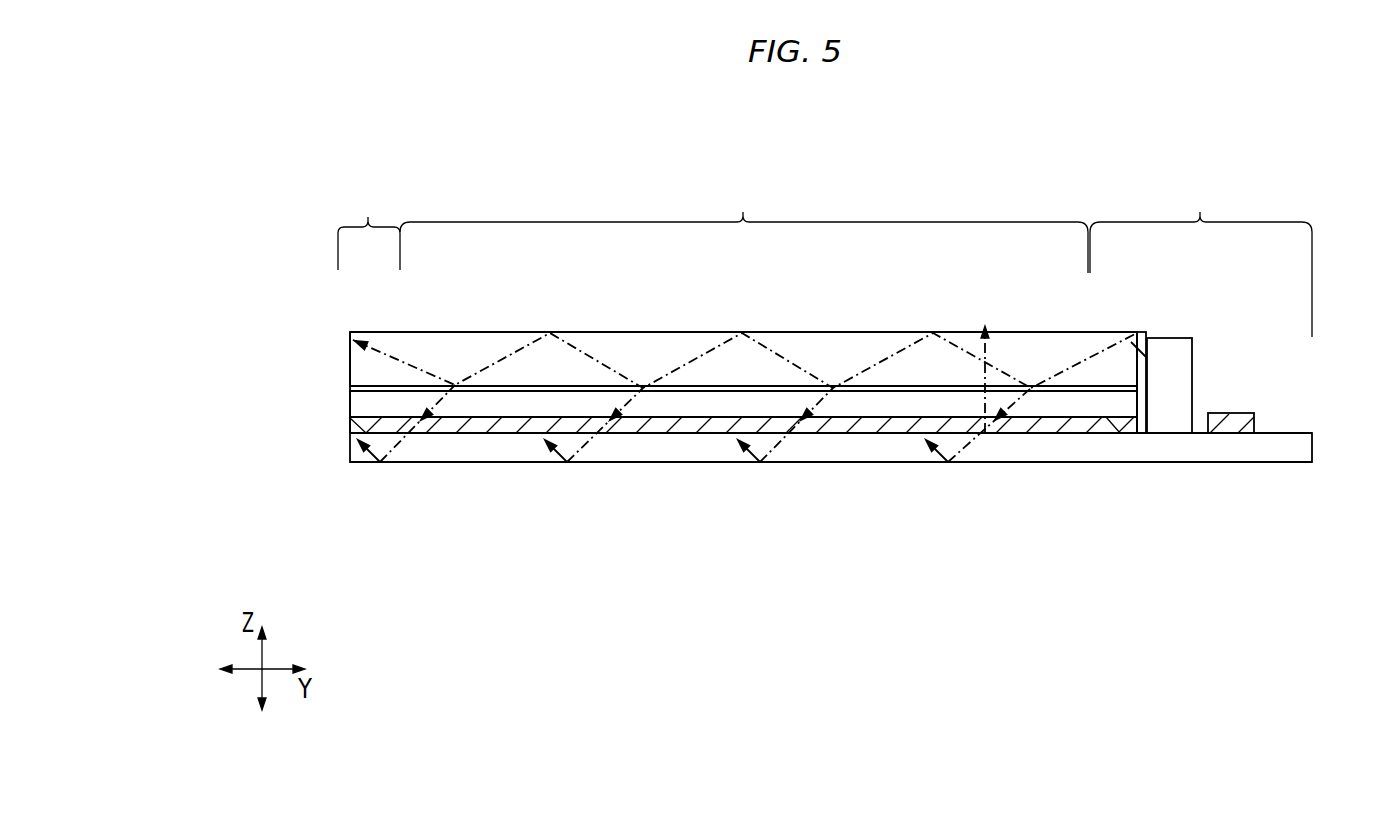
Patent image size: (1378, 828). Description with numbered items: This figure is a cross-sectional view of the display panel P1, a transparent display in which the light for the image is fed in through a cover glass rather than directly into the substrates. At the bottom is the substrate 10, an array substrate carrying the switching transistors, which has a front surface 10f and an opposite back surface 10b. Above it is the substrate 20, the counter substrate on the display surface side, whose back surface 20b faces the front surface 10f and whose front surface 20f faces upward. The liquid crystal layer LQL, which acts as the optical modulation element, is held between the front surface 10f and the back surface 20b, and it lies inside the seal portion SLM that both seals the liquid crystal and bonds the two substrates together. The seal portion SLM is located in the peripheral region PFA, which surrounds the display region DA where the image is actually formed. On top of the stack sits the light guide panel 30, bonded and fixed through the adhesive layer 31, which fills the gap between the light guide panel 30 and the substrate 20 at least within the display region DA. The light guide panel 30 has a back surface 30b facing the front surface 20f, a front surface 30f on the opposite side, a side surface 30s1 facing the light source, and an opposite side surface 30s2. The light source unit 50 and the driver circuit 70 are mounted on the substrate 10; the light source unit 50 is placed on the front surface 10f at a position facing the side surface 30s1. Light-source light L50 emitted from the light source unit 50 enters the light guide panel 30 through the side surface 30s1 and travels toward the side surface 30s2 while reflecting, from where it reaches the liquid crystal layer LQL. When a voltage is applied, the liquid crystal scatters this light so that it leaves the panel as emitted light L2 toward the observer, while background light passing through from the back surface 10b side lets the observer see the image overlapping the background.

The display panel P1 is at (562, 198).
The substrate 10 is at (350, 452).
The front surface 10f is at (670, 422).
The back surface 10b is at (925, 472).
The substrate 20 is at (362, 399).
The front surface 20f is at (554, 380).
The back surface 20b is at (776, 426).
The light guide panel 30 is at (372, 368).
The front surface 30f is at (638, 326).
The back surface 30b is at (509, 400).
The side surface 30s1 is at (1146, 375).
The side surface 30s2 is at (341, 345).
The adhesive layer 31 is at (877, 385).
The light source unit 50 is at (1185, 367).
The driver circuit 70 is at (1244, 414).
The light-source light L50 is at (1053, 368).
The emitted light L2 is at (985, 380).
The seal portion SLM is at (352, 428).
The liquid crystal layer LQL is at (505, 426).
The peripheral region PFA is at (825, 258).
The display region DA is at (744, 226).